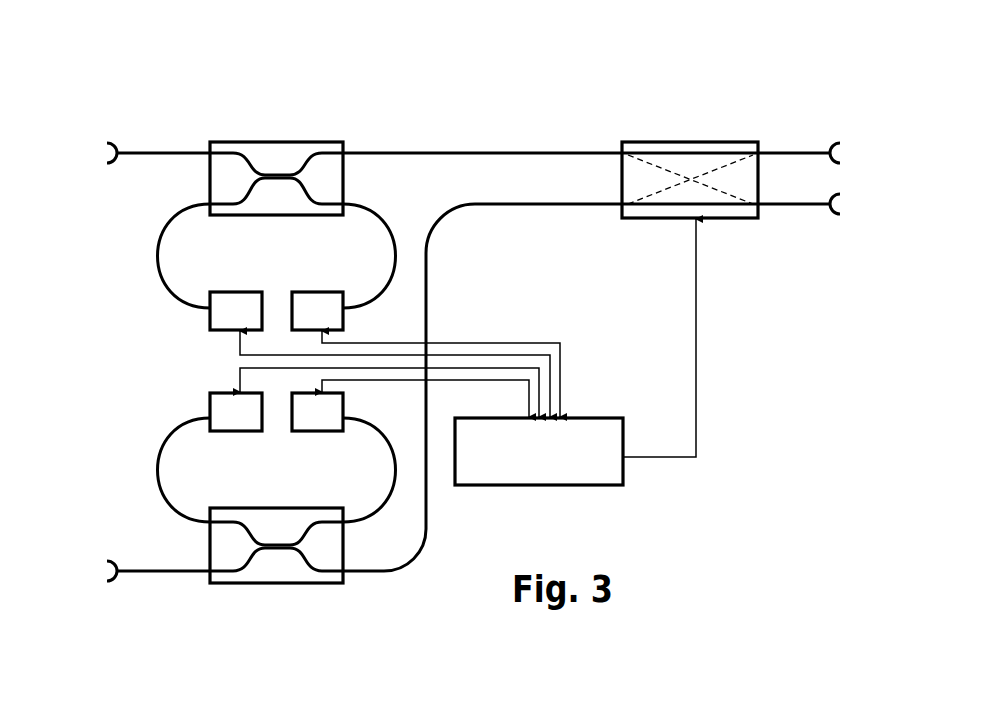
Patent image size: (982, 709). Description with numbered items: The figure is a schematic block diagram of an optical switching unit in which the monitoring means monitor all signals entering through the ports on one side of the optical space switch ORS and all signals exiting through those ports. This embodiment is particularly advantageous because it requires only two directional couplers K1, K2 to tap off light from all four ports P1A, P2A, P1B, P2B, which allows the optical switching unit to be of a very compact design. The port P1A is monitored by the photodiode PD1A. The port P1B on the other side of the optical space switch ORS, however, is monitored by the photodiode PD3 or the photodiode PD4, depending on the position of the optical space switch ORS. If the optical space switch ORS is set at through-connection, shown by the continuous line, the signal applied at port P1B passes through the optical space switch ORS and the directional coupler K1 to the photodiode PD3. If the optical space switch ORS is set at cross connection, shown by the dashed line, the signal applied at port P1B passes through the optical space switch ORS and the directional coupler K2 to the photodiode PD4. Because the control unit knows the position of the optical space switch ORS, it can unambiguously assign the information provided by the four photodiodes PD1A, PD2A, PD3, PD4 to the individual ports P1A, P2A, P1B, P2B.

The directional coupler K1 is at (258, 155).
The directional coupler K2 is at (272, 562).
The optical space switch ORS is at (688, 170).
The photodiode PD1A is at (323, 313).
The photodiode PD2A is at (317, 412).
The photodiode PD3 is at (223, 312).
The photodiode PD4 is at (223, 410).
The port P1A is at (129, 158).
The port P2A is at (129, 575).
The port P1B is at (828, 158).
The port P2B is at (828, 208).